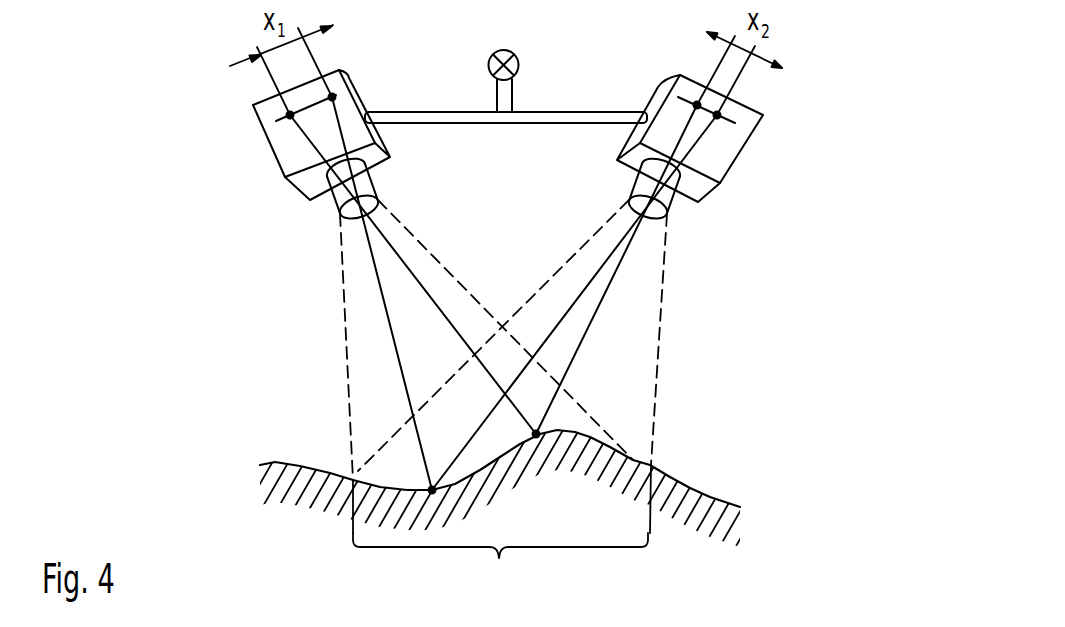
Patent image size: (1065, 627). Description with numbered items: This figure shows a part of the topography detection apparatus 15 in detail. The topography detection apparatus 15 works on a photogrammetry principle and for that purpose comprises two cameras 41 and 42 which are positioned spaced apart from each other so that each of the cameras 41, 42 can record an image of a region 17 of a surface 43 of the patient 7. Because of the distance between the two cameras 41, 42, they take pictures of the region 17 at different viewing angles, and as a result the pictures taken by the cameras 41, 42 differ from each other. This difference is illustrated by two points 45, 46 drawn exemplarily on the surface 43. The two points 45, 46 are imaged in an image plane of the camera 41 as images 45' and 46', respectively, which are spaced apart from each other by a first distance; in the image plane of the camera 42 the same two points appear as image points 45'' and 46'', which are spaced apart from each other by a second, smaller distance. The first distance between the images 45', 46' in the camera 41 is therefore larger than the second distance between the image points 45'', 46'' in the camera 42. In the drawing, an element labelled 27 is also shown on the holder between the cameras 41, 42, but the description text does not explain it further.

The patient 7 is at (296, 488).
The topography detection apparatus 15 is at (861, 154).
The region 17 is at (502, 528).
The light source 27 is at (518, 53).
The camera 41 is at (280, 167).
The camera 42 is at (738, 167).
The surface 43 is at (702, 490).
The point 45 is at (441, 454).
The point 46 is at (547, 476).
The image 45' is at (381, 261).
The image 46' is at (364, 265).
The image point 45'' is at (626, 299).
The image point 46'' is at (618, 232).